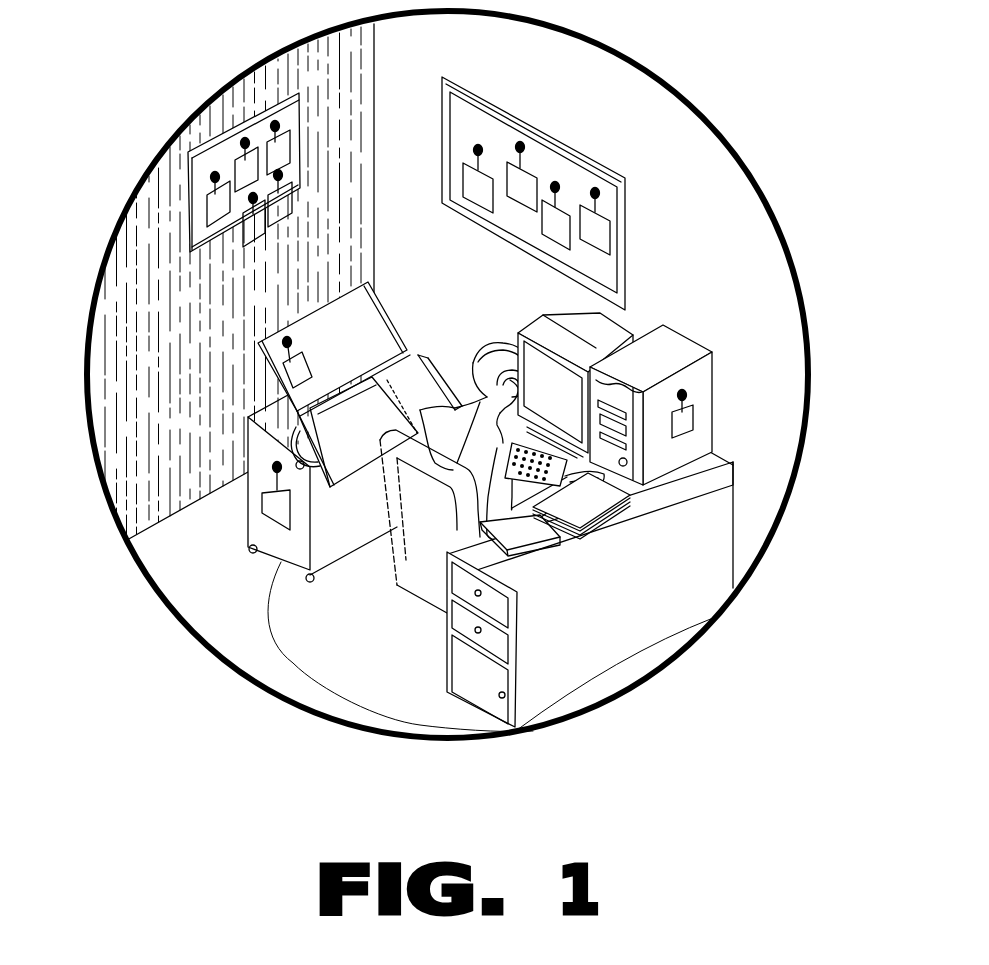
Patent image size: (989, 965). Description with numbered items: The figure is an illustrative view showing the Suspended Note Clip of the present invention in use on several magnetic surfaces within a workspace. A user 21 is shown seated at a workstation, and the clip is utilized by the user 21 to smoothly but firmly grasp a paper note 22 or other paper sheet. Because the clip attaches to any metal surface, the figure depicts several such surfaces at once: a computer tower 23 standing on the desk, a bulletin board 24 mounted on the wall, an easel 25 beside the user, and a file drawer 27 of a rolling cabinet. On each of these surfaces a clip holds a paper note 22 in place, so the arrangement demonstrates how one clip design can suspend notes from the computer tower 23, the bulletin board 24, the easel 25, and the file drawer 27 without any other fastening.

The user 21 is at (450, 435).
The paper note 22 is at (685, 422).
The computer tower 23 is at (662, 468).
The bulletin board 24 is at (215, 158).
The easel 25 is at (327, 325).
The file drawer 27 is at (267, 537).